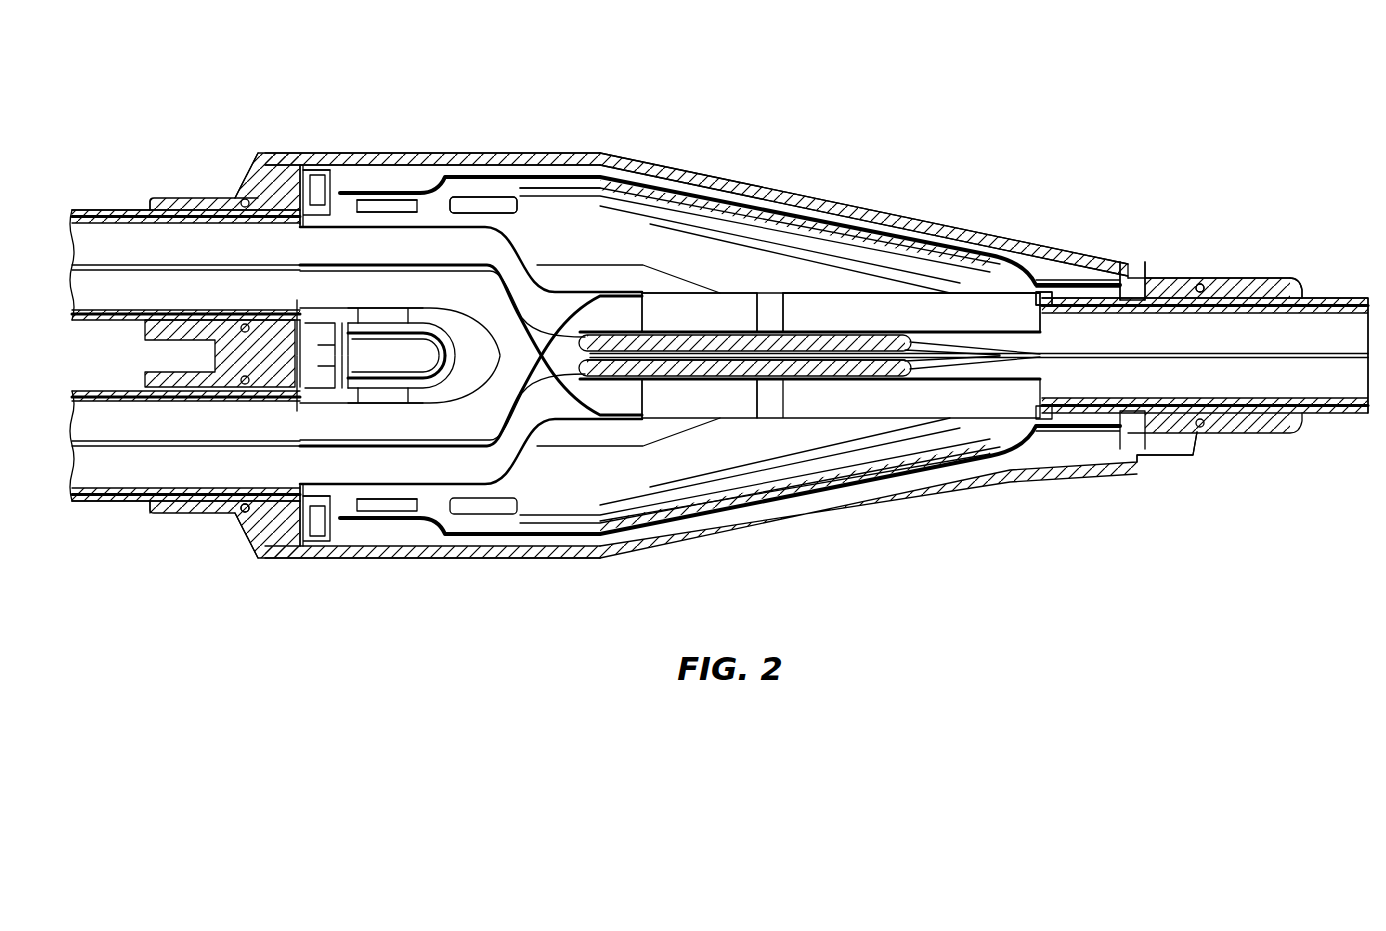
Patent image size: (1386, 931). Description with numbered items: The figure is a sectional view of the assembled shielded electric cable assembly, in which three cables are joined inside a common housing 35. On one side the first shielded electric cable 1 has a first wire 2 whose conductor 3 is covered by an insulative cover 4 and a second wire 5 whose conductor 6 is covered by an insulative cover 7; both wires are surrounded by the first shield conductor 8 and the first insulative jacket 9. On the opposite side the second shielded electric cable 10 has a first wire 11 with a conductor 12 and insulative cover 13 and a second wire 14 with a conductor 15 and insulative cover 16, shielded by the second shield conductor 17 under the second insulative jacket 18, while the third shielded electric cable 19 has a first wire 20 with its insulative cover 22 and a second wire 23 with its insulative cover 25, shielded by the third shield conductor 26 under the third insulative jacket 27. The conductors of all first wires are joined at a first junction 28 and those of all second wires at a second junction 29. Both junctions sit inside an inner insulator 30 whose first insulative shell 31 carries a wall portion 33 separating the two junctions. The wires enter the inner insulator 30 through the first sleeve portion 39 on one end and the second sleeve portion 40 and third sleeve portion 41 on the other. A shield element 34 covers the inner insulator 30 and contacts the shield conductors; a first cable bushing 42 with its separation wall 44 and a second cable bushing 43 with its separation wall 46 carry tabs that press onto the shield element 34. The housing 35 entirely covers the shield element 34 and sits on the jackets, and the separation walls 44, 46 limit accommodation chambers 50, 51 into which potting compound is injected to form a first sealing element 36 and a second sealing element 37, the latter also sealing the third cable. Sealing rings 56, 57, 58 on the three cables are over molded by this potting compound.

The first shielded electric cable 1 is at (1330, 292).
The first wire 2 is at (888, 295).
The conductor 3 is at (780, 295).
The insulative cover 4 is at (840, 290).
The second wire 5 is at (888, 422).
The conductor 6 is at (765, 410).
The insulative cover 7 is at (820, 440).
The first shield conductor 8 is at (1047, 292).
The first insulative jacket 9 is at (1270, 298).
The second shielded electric cable 10 is at (112, 205).
The first wire 11 is at (270, 240).
The conductor 12 is at (740, 280).
The insulative cover 13 is at (492, 218).
The second wire 14 is at (340, 270).
The conductor 15 is at (663, 395).
The insulative cover 16 is at (368, 255).
The second shield conductor 17 is at (430, 230).
The second insulative jacket 18 is at (165, 205).
The third shielded electric cable 19 is at (110, 512).
The first wire 20 is at (300, 530).
The insulative cover 22 is at (490, 530).
The second wire 23 is at (340, 500).
The insulative cover 25 is at (415, 520).
The third shield conductor 26 is at (465, 545).
The third insulative jacket 27 is at (160, 505).
The first junction 28 is at (768, 410).
The second junction 29 is at (705, 437).
The inner insulator 30 is at (597, 240).
The first insulative shell 31 is at (557, 200).
The wall portion 33 is at (604, 382).
The shield element 34 is at (970, 250).
The housing 35 is at (935, 245).
The first sealing element 36 is at (1245, 290).
The second sealing element 37 is at (262, 183).
The first sleeve portion 39 is at (1075, 287).
The second sleeve portion 40 is at (390, 193).
The third sleeve portion 41 is at (382, 522).
The first cable bushing 42 is at (1128, 265).
The second cable bushing 43 is at (318, 285).
The separation wall 44 is at (1140, 288).
The separation wall 46 is at (305, 215).
The accommodation chamber 50 is at (1185, 440).
The accommodation chamber 51 is at (248, 514).
The sealing ring 56 is at (1190, 294).
The sealing ring 57 is at (250, 195).
The sealing ring 58 is at (222, 545).